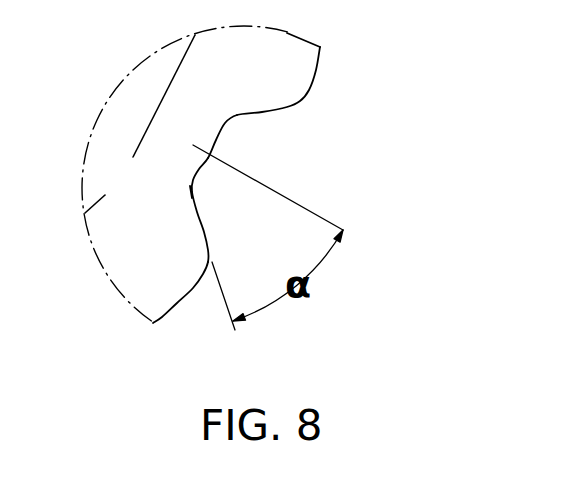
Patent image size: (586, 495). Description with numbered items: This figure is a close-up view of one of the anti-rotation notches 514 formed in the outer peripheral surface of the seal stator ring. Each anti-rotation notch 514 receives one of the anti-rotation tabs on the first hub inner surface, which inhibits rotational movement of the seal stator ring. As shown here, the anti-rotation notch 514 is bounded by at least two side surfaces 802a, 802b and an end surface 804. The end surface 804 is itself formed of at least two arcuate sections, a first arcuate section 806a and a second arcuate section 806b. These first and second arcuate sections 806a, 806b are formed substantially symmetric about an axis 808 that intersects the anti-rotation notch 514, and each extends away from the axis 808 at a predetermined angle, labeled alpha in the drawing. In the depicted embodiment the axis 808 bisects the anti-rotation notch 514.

The anti-rotation notch 514 is at (380, 168).
The side surface 802a is at (276, 110).
The side surface 802b is at (205, 236).
The end surface 804 is at (213, 153).
The first arcuate section 806a is at (235, 115).
The second arcuate section 806b is at (192, 192).
The axis 808 is at (345, 231).